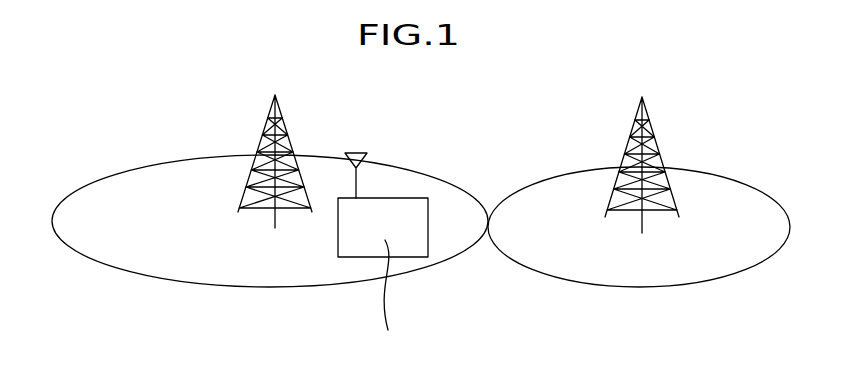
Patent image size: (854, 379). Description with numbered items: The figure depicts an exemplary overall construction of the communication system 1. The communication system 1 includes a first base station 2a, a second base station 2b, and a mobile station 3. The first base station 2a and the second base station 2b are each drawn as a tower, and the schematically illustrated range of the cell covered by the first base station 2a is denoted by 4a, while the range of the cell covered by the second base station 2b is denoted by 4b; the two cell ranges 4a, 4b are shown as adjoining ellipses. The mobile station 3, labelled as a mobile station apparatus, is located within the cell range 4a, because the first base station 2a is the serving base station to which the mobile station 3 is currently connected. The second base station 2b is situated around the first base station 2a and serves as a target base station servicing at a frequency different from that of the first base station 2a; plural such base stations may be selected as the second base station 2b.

The communication system 1 is at (177, 75).
The first base station 2a is at (290, 140).
The second base station 2b is at (653, 137).
The mobile station 3 is at (400, 198).
The range of cell covered by the first base station 4a is at (140, 280).
The range of cell covered by the second base station 4b is at (694, 285).